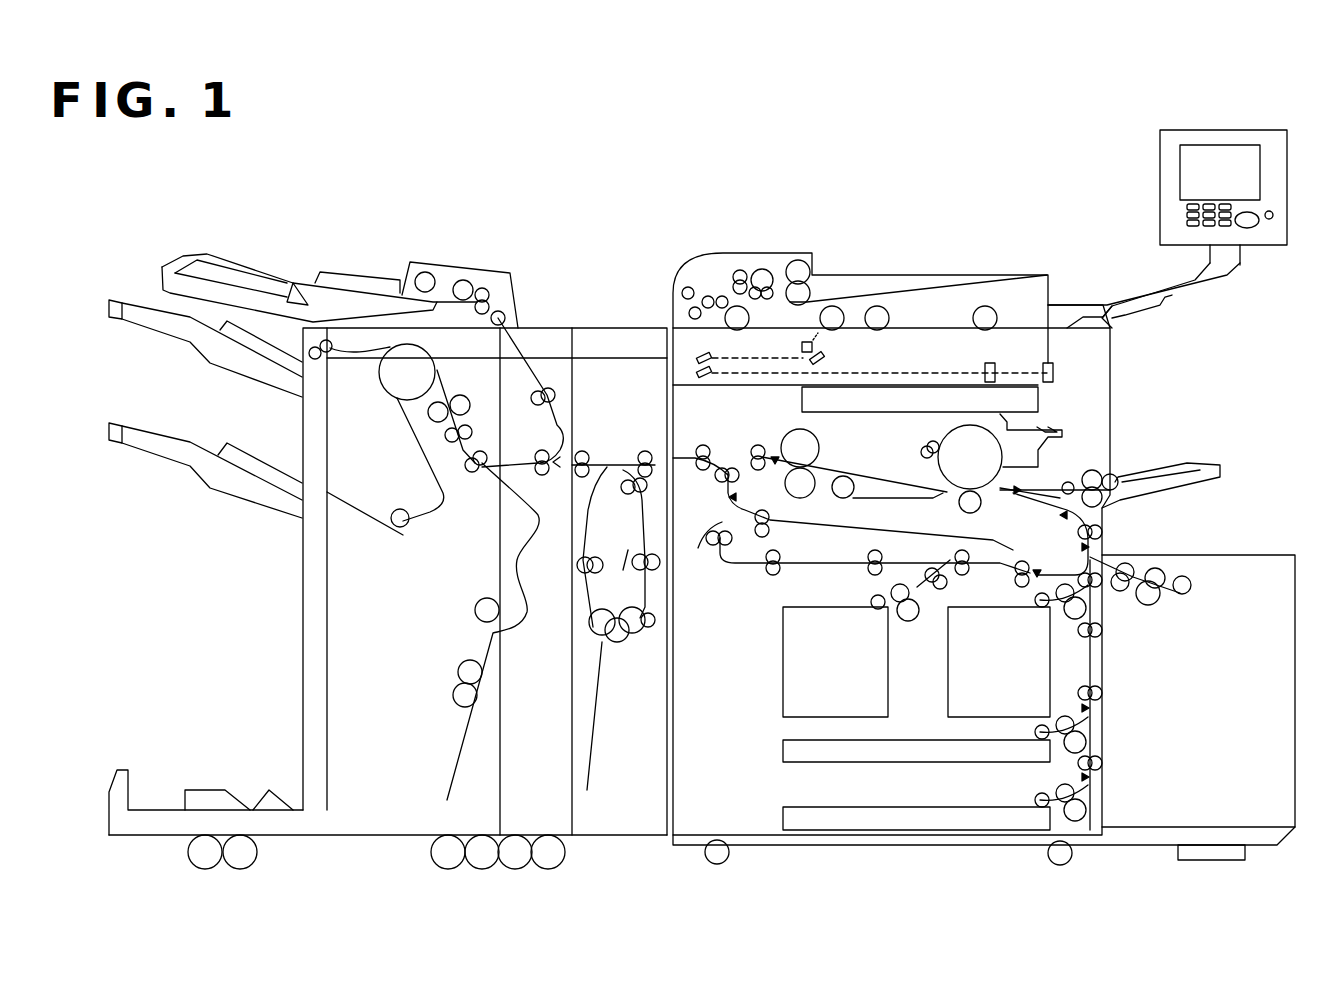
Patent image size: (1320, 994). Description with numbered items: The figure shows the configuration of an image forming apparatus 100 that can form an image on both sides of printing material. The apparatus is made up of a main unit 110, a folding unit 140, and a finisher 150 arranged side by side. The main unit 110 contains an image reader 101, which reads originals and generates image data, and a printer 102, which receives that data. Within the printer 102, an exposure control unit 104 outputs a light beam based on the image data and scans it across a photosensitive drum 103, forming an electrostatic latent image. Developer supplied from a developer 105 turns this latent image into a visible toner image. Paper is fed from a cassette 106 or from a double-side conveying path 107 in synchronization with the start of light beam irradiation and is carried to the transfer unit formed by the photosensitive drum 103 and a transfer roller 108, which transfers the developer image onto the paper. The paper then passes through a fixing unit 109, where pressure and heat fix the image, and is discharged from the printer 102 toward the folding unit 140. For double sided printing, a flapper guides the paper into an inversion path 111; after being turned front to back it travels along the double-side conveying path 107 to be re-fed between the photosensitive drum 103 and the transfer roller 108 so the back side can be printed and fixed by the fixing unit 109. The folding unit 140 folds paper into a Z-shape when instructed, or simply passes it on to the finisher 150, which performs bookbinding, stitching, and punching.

The image forming apparatus 100 is at (785, 178).
The image reader 101 is at (1028, 340).
The printer 102 is at (1095, 378).
The photosensitive drum 103 is at (938, 458).
The exposure control unit 104 is at (888, 386).
The developer 105 is at (1063, 433).
The cassette 106 is at (948, 642).
The double-side conveying path 107 is at (1052, 575).
The transfer roller 108 is at (972, 513).
The fixing unit 109 is at (785, 436).
The main unit 110 is at (688, 823).
The inversion path 111 is at (815, 530).
The folding unit 140 is at (607, 823).
The finisher 150 is at (368, 823).